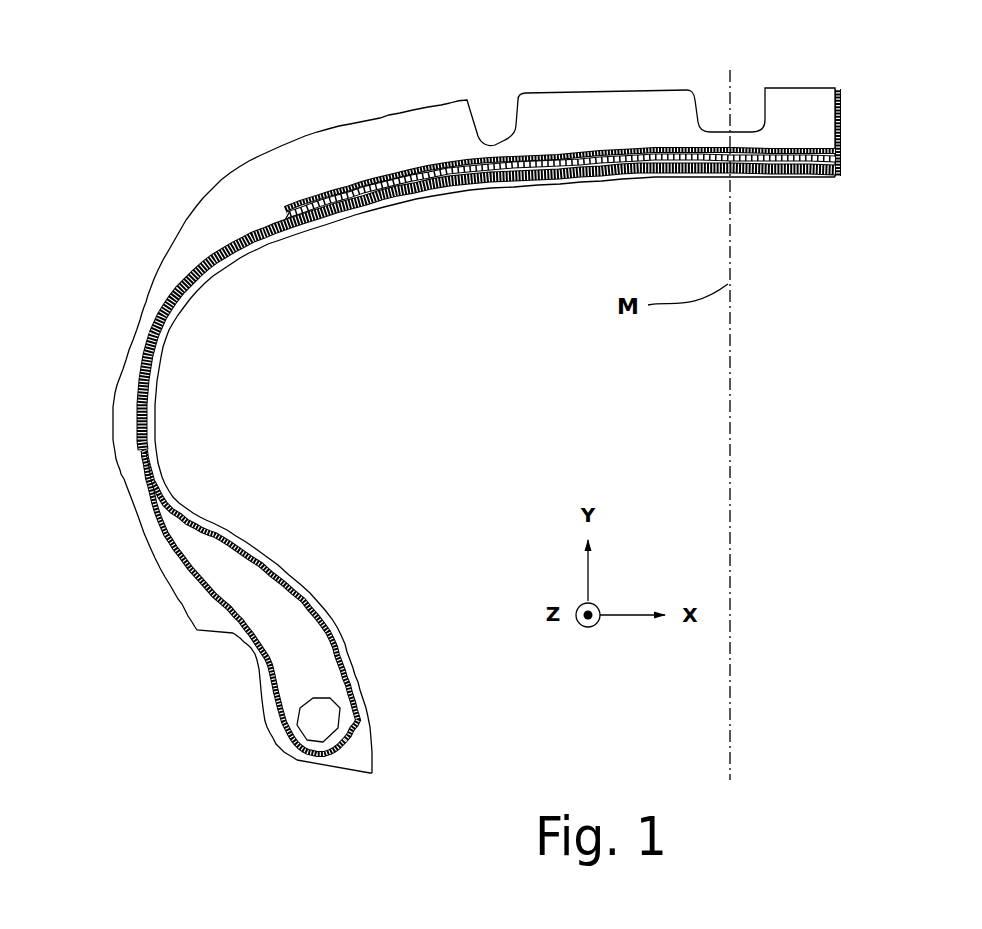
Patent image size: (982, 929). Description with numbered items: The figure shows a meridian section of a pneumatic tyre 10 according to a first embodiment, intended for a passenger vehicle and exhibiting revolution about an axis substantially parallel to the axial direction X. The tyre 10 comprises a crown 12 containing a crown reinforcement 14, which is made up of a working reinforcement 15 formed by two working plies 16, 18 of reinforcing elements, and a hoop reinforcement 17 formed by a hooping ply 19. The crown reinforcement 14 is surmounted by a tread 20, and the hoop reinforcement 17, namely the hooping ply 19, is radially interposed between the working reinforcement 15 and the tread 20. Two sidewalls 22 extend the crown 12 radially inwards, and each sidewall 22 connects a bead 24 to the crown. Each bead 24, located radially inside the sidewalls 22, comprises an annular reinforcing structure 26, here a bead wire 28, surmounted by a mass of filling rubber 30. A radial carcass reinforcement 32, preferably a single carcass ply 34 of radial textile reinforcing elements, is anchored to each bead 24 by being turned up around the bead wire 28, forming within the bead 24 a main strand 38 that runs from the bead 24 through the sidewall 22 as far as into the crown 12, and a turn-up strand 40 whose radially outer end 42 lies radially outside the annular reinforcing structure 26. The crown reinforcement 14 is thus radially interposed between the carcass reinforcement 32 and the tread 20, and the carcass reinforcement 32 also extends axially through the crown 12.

The tyre 10 is at (218, 100).
The crown 12 is at (597, 78).
The crown reinforcement 14 is at (674, 116).
The working reinforcement 15 is at (248, 228).
The working ply 16 is at (266, 214).
The hoop reinforcement 17 is at (396, 157).
The working ply 18 is at (273, 217).
The hooping ply 19 is at (337, 187).
The tread 20 is at (407, 102).
The sidewall 22 is at (141, 322).
The bead 24 is at (363, 733).
The annular reinforcing structure 26 is at (352, 740).
The bead wire 28 is at (313, 727).
The mass of filling rubber 30 is at (289, 660).
The radial carcass reinforcement 32 is at (176, 277).
The carcass ply 34 is at (140, 393).
The main strand 38 is at (347, 660).
The turn-up strand 40 is at (170, 548).
The radially outer end 42 is at (135, 429).